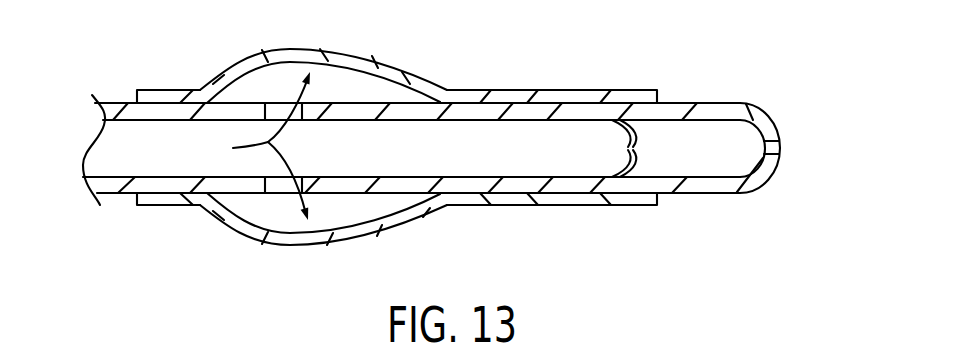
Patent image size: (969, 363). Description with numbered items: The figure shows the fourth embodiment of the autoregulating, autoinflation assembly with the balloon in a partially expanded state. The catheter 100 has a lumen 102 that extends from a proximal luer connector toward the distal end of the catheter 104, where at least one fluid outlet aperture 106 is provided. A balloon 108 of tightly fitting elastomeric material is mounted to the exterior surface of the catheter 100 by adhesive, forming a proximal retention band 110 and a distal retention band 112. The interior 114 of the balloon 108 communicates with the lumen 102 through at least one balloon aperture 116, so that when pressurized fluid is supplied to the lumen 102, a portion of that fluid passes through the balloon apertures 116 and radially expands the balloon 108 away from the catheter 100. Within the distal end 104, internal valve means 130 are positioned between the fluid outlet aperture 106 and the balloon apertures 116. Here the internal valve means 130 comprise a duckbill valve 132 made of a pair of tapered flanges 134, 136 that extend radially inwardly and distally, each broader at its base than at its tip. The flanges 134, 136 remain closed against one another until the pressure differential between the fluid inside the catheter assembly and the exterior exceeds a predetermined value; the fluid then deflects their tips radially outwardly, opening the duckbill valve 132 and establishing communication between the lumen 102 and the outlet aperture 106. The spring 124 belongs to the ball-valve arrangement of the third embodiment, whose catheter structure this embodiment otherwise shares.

The catheter 100 is at (105, 192).
The lumen 102 is at (133, 157).
The distal end of the catheter 104 is at (775, 120).
The fluid outlet aperture 106 is at (783, 147).
The balloon 108 is at (353, 53).
The proximal retention band 110 is at (158, 88).
The distal retention band 112 is at (623, 90).
The interior of the balloon 114 is at (392, 89).
The balloon aperture 116 is at (283, 110).
The spring 124 is at (735, 160).
The internal valve means 130 is at (636, 142).
The duckbill valve 132 is at (600, 137).
The tapered flange 134 is at (655, 128).
The tapered flange 136 is at (612, 160).